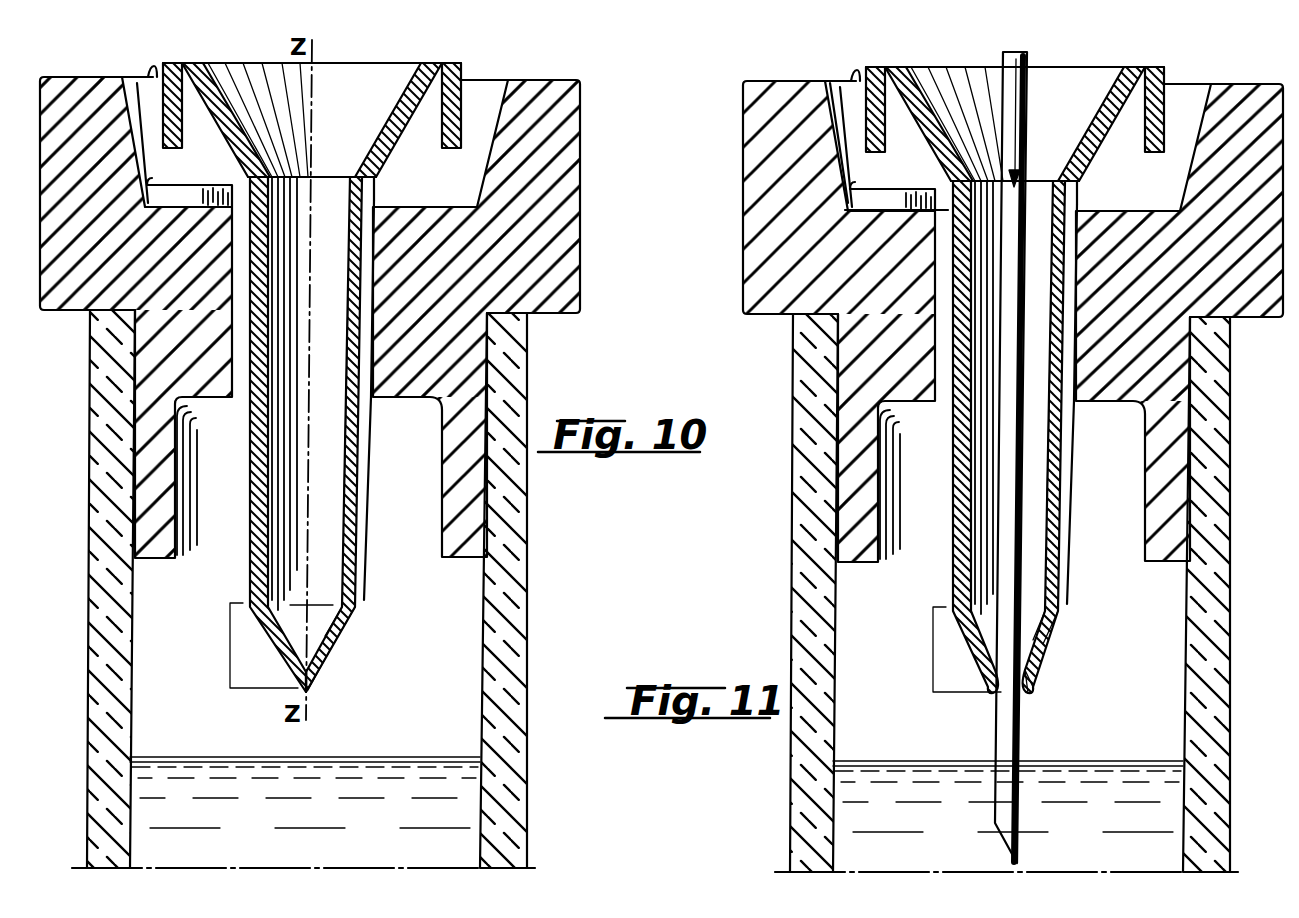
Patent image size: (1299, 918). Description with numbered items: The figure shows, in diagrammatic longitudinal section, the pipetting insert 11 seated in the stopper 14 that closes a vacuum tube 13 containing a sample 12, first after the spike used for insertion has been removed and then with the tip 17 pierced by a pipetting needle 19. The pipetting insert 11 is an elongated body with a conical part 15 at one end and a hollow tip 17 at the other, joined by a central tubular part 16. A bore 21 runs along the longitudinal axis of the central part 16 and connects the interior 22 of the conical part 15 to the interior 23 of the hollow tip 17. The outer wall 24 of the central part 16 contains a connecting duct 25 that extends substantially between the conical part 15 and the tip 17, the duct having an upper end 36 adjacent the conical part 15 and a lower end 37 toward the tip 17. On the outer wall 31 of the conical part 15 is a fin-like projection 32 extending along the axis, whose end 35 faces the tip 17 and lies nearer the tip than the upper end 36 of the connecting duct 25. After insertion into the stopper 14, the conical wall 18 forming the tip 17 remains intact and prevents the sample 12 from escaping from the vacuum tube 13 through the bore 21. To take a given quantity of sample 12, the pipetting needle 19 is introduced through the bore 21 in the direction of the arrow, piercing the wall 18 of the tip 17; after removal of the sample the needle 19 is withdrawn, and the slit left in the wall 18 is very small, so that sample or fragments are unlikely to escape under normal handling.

In FIG. 10, the pipetting insert 11 is at (353, 660).
In FIG. 11, the pipetting insert 11 is at (1071, 675).
In FIG. 10, the sample 12 is at (408, 775).
In FIG. 11, the sample 12 is at (1008, 779).
In FIG. 10, the vacuum tube 13 is at (508, 652).
In FIG. 11, the vacuum tube 13 is at (1028, 593).
In FIG. 10, the stopper 14 is at (577, 266).
In FIG. 11, the stopper 14 is at (984, 321).
In FIG. 10, the conical part 15 is at (143, 117).
In FIG. 11, the conical part 15 is at (836, 126).
In FIG. 10, the central tubular part 16 is at (223, 456).
In FIG. 11, the central tubular part 16 is at (910, 484).
In FIG. 10, the tip 17 is at (224, 636).
In FIG. 11, the tip 17 is at (950, 649).
In FIG. 10, the conical wall 18 is at (319, 668).
In FIG. 11, the conical wall 18 is at (1055, 693).
In FIG. 11, the pipetting needle 19 is at (1038, 457).
In FIG. 10, the bore 21 is at (335, 255).
In FIG. 11, the bore 21 is at (1039, 437).
In FIG. 10, the interior of the conical part 22 is at (377, 80).
In FIG. 11, the interior of the conical part 22 is at (1015, 106).
In FIG. 10, the interior of the hollow tip 23 is at (325, 625).
In FIG. 11, the interior of the hollow tip 23 is at (1074, 640).
In FIG. 10, the outer wall 24 is at (358, 464).
In FIG. 11, the outer wall 24 is at (1086, 404).
In FIG. 10, the connecting duct 25 is at (360, 497).
In FIG. 11, the connecting duct 25 is at (1093, 404).
In FIG. 10, the outer wall of the conical part 31 is at (422, 130).
In FIG. 11, the outer wall of the conical part 31 is at (1143, 125).
In FIG. 10, the fin-like projection 32 is at (197, 190).
In FIG. 11, the fin-like projection 32 is at (895, 215).
In FIG. 10, the end of the fin-like projection 35 is at (215, 207).
In FIG. 11, the end of the fin-like projection 35 is at (904, 229).
In FIG. 10, the upper end of the connecting duct 36 is at (373, 190).
In FIG. 11, the upper end of the connecting duct 36 is at (1103, 192).
In FIG. 10, the lower end of the connecting duct 37 is at (357, 620).
In FIG. 11, the lower end of the connecting duct 37 is at (1080, 627).